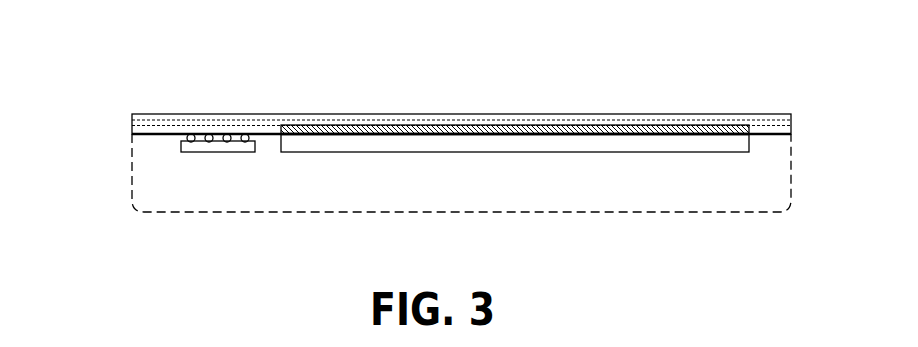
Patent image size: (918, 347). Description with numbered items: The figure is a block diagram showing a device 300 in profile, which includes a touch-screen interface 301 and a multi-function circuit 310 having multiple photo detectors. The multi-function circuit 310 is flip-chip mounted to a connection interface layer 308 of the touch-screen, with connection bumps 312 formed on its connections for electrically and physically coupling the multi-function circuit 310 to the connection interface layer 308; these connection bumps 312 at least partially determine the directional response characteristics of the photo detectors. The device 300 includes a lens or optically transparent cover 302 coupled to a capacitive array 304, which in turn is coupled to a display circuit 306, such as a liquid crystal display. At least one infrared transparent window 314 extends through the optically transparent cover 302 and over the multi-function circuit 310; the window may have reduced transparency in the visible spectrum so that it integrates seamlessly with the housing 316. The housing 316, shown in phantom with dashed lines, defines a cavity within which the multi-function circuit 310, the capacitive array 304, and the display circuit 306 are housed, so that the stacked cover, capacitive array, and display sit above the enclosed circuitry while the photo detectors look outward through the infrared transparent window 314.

The device 300 is at (114, 38).
The touch-screen interface 301 is at (496, 106).
The optically transparent cover 302 is at (352, 114).
The capacitive array 304 is at (343, 135).
The display circuit 306 is at (427, 143).
The connection interface layer 308 is at (132, 127).
The multi-function circuit 310 is at (224, 153).
The connection bumps 312 is at (166, 138).
The infrared transparent window 314 is at (219, 104).
The housing 316 is at (245, 213).